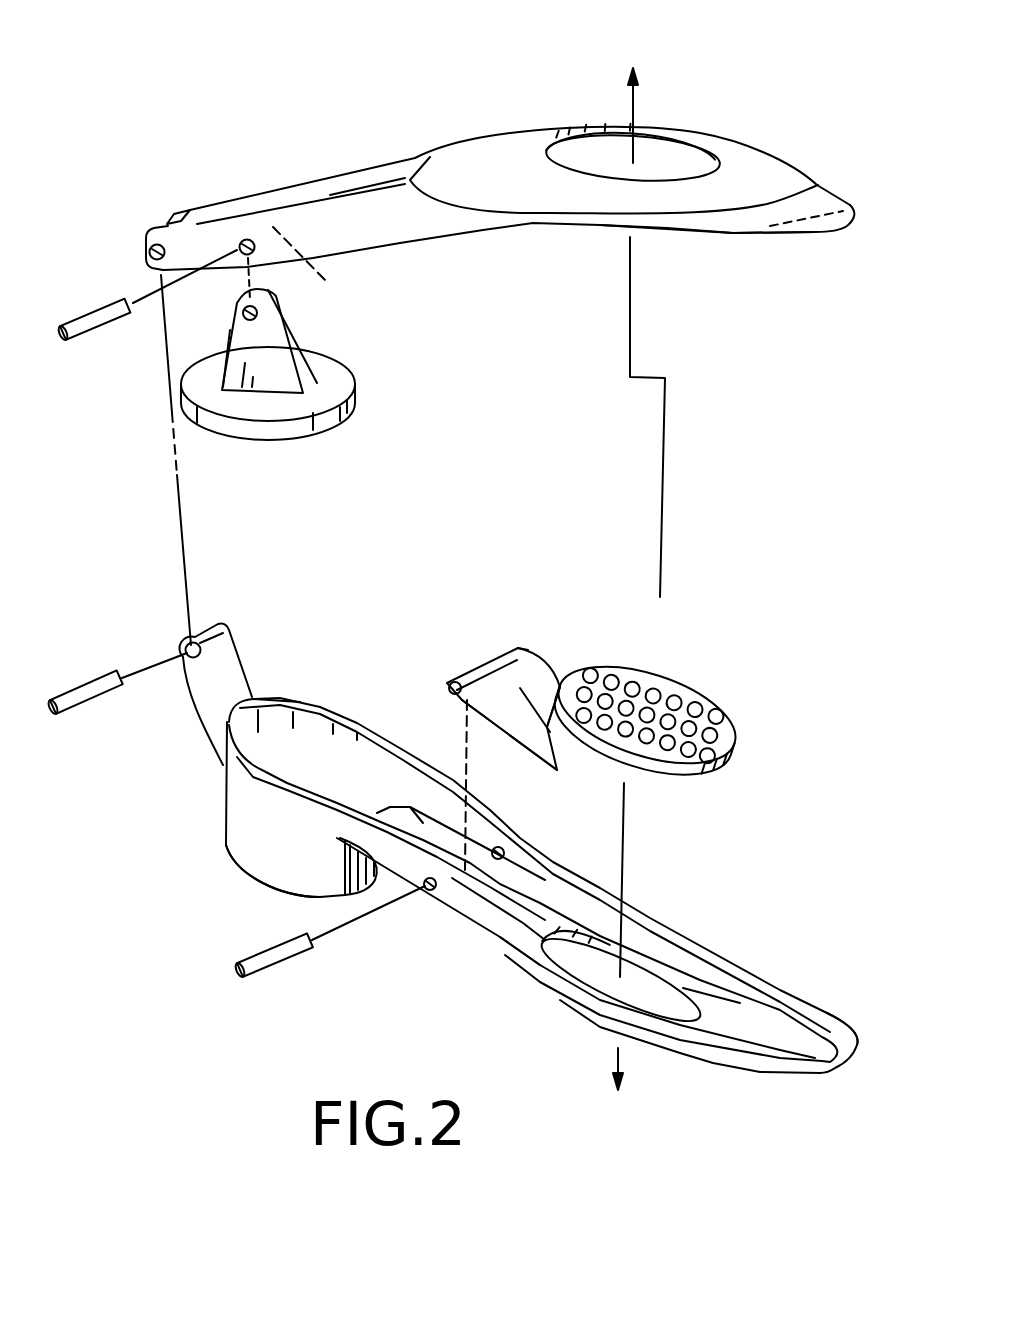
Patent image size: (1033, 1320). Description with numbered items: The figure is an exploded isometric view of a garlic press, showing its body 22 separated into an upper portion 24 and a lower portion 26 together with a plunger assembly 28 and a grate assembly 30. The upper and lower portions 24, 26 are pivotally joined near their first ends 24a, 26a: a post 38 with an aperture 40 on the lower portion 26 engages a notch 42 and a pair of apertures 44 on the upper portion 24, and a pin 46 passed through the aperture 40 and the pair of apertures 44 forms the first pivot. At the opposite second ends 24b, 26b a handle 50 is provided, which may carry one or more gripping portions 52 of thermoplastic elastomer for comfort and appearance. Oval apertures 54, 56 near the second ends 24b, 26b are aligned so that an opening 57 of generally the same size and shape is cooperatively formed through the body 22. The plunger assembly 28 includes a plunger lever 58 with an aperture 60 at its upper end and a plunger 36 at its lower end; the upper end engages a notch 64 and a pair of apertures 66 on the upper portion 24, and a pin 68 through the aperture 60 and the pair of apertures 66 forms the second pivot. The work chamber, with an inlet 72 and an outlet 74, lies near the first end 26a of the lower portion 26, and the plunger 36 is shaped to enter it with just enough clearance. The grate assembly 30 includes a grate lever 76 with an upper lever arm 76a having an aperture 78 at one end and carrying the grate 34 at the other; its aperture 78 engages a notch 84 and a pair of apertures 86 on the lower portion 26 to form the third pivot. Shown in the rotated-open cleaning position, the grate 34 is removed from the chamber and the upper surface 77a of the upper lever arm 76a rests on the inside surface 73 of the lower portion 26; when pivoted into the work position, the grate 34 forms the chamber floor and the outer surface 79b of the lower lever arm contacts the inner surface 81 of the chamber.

The body 22 is at (370, 183).
The upper portion 24 is at (490, 163).
The first end 24a is at (210, 240).
The second end 24b is at (817, 200).
The lower portion 26 is at (545, 887).
The first end 26a is at (242, 690).
The second end 26b is at (800, 1047).
The plunger assembly 28 is at (372, 428).
The grate assembly 30 is at (432, 655).
The grate 34 is at (733, 727).
The plunger 36 is at (283, 435).
The post 38 is at (210, 707).
The aperture 40 is at (196, 640).
The notch 42 is at (170, 214).
The pair of apertures 44 is at (150, 251).
The pin 46 is at (90, 676).
The handle 50 is at (747, 173).
The gripping portion 52 is at (677, 207).
The aperture 54 is at (673, 157).
The aperture 56 is at (645, 992).
The opening 57 is at (633, 584).
The plunger lever 58 is at (265, 340).
The aperture 60 is at (243, 313).
The notch 64 is at (325, 280).
The pair of apertures 66 is at (247, 240).
The pin 68 is at (93, 323).
The inlet 72 is at (347, 750).
The inside surface 73 is at (523, 923).
The outlet 74 is at (283, 858).
The grate lever 76 is at (523, 673).
The upper lever arm 76a is at (500, 680).
The upper surface 77a is at (508, 737).
The aperture 78 is at (447, 690).
The outer surface 79b is at (560, 693).
The inner surface 81 is at (380, 810).
The notch 84 is at (452, 868).
The pair of apertures 86 is at (505, 851).